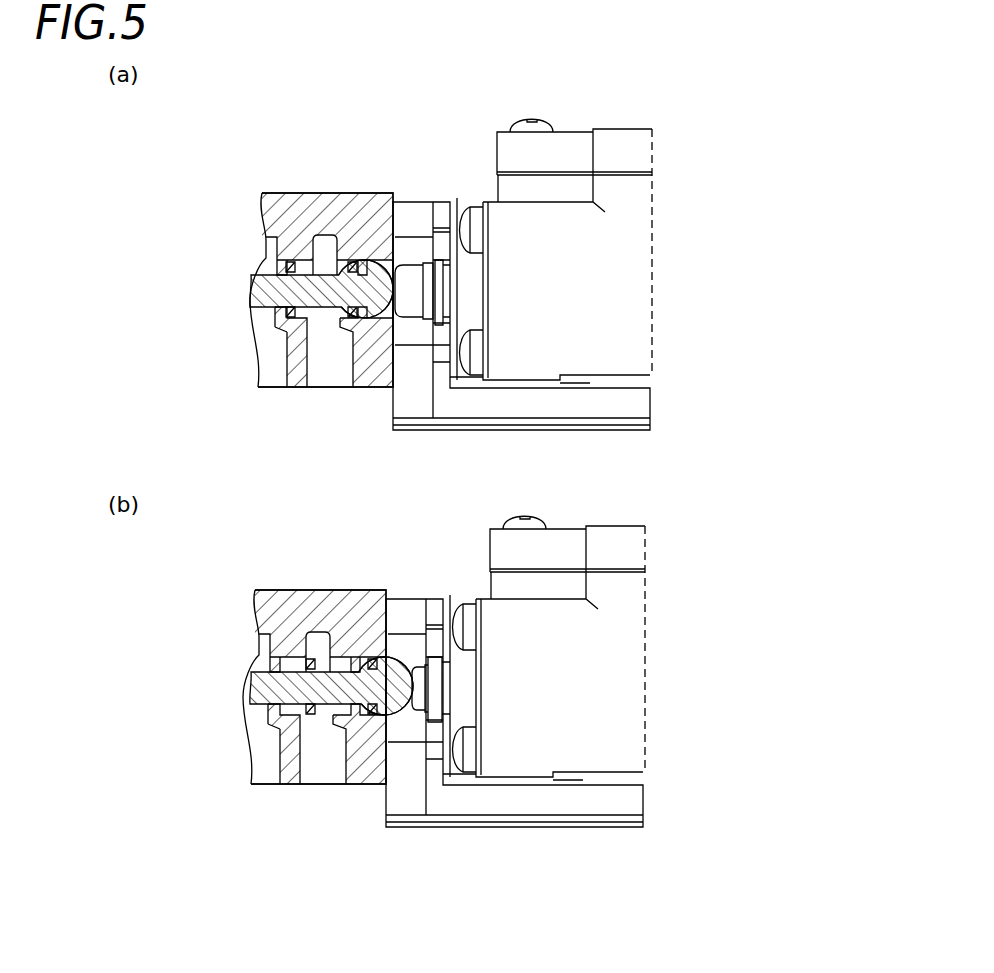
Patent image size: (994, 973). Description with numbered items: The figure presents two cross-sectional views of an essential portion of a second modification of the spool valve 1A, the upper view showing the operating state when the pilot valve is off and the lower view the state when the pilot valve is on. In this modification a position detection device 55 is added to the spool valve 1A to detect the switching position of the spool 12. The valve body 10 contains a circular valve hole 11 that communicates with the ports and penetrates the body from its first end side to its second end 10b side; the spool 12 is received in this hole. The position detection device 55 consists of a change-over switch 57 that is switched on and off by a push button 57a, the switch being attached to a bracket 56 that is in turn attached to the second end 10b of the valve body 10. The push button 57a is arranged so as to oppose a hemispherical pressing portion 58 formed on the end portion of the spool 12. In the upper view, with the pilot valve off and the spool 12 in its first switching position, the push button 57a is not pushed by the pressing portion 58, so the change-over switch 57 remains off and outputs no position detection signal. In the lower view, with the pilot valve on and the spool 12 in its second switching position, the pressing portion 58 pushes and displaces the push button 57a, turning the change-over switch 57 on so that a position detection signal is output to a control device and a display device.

The spool valve 1A is at (243, 133).
The valve body 10 is at (299, 207).
The second end 10b is at (410, 283).
The circular valve hole 11 is at (274, 271).
The spool 12 is at (266, 293).
The position detection device 55 is at (476, 166).
The bracket 56 is at (559, 424).
The change-over switch 57 is at (623, 272).
The push button 57a is at (418, 282).
The hemispherical pressing portion 58 is at (368, 293).